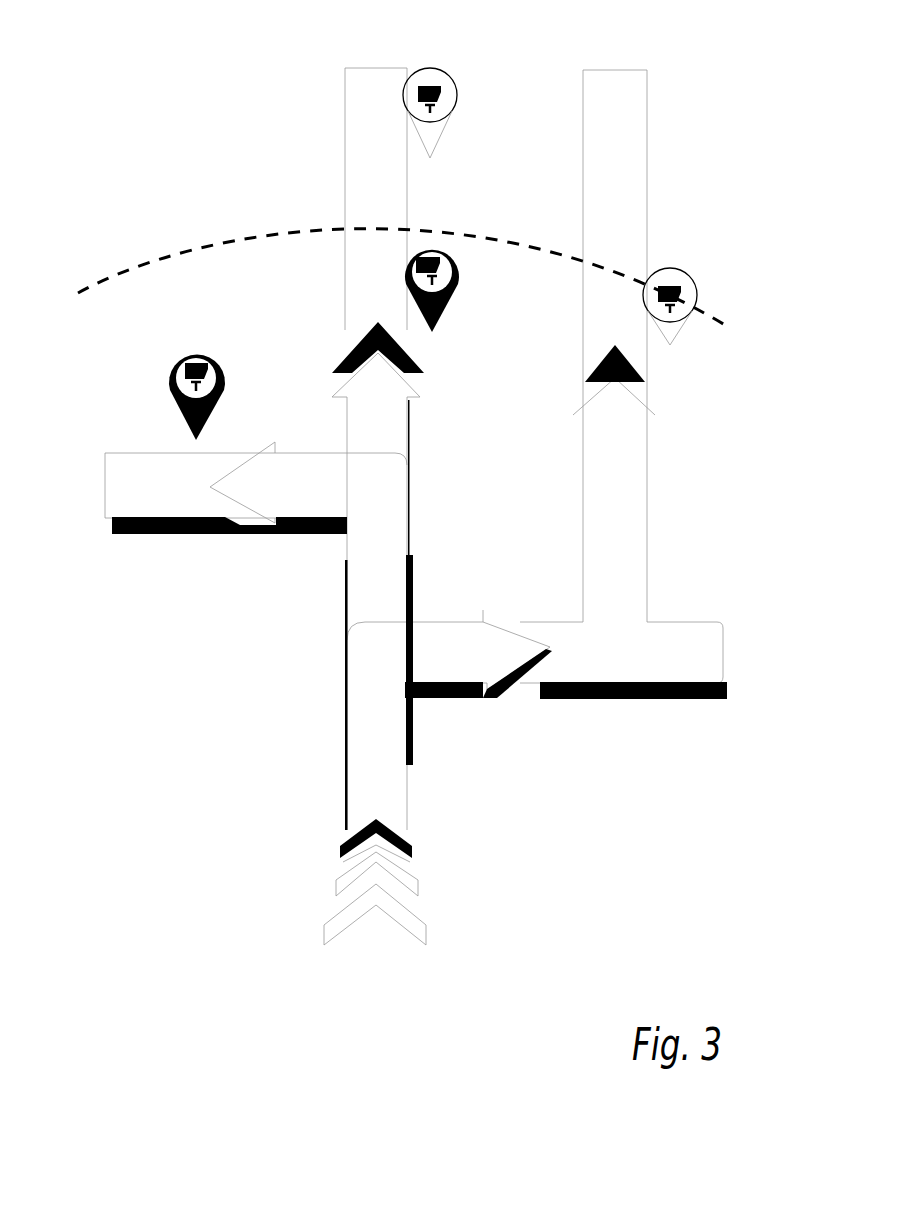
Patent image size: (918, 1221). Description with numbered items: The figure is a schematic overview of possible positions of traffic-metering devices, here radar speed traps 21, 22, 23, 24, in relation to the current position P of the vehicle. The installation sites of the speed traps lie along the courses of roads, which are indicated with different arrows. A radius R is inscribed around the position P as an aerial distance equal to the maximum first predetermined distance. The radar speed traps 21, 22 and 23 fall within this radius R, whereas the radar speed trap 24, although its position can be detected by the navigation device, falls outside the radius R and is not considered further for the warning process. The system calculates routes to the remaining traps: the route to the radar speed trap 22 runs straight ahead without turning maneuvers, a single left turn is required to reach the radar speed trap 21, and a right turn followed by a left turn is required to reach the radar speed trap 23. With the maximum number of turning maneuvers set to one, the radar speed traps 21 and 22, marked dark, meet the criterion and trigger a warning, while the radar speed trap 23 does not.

The radar speed trap 21 is at (168, 387).
The radar speed trap 22 is at (453, 266).
The radar speed trap 23 is at (698, 296).
The radar speed trap 24 is at (453, 84).
The radius R is at (205, 248).
The position of the vehicle P is at (375, 884).